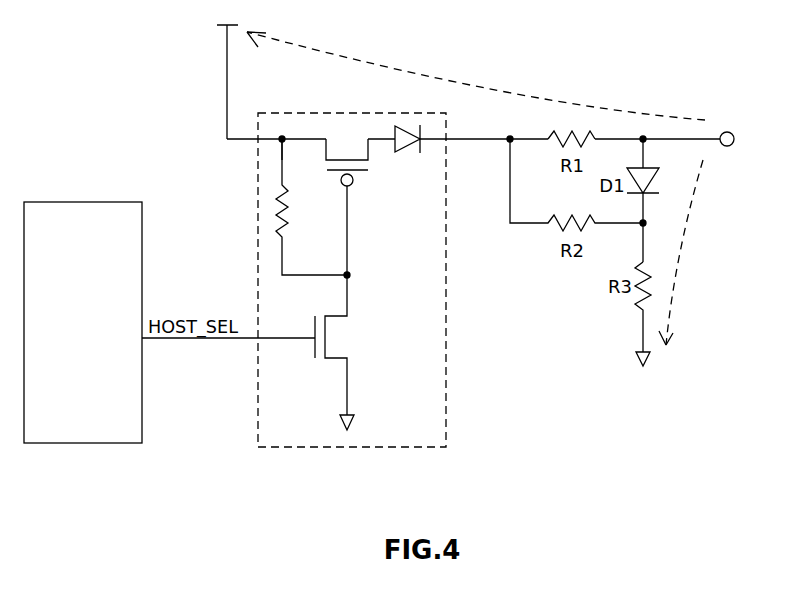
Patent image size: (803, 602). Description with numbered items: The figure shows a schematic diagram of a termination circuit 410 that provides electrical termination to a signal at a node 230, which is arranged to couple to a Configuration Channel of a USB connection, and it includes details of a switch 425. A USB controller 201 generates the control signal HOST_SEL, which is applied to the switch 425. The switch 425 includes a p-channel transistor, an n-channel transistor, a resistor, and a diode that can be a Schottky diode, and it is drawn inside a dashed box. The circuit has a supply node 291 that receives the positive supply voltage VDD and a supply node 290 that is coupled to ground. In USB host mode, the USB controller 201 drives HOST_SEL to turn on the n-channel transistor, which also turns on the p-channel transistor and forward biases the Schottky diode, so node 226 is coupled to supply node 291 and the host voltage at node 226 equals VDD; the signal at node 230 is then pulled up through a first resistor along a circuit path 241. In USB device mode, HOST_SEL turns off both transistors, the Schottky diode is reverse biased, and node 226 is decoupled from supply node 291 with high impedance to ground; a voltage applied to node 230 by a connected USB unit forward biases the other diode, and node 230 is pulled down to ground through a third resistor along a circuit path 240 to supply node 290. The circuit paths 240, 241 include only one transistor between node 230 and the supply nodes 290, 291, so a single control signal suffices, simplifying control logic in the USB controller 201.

The USB controller 201 is at (82, 202).
The node 226 is at (508, 142).
The node 230 is at (727, 132).
The circuit path 240 is at (685, 212).
The circuit path 241 is at (421, 80).
The supply node 290 is at (347, 398).
The supply node 291 is at (227, 44).
The termination circuit 410 is at (560, 385).
The switch 425 is at (365, 450).